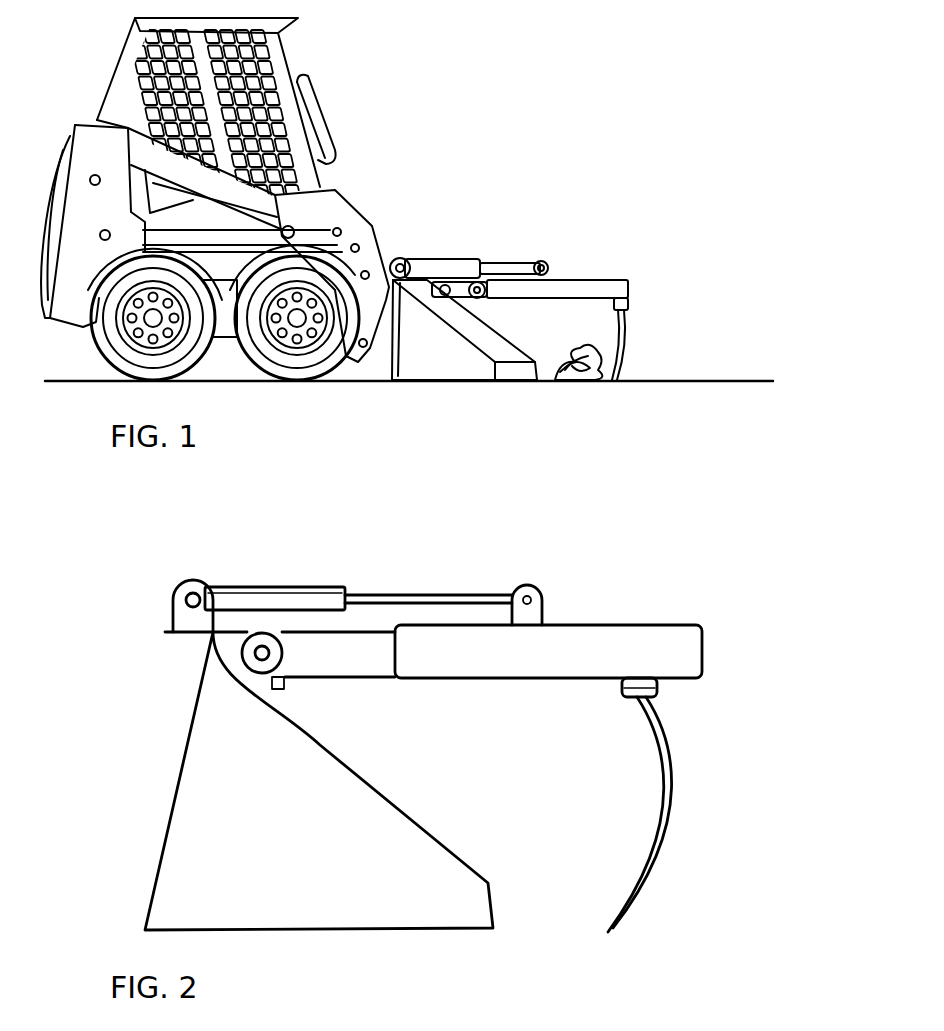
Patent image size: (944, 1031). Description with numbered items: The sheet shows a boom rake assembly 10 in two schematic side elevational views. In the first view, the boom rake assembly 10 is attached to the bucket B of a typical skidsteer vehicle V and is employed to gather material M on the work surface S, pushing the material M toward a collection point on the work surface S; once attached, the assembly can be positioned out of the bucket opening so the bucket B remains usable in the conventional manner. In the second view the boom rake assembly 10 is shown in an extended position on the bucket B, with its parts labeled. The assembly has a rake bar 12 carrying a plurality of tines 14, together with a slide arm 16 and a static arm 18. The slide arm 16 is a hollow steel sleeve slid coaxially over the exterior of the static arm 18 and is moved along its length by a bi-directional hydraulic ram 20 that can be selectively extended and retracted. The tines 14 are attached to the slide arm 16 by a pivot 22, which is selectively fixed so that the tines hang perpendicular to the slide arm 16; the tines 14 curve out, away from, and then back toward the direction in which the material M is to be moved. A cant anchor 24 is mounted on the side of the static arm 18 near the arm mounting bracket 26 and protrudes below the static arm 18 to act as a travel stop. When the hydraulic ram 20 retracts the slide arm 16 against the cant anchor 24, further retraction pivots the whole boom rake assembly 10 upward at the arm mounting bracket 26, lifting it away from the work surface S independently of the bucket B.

In FIG. 1, the boom rake assembly 10 is at (509, 283).
In FIG. 2, the boom rake assembly 10 is at (437, 719).
In FIG. 2, the rake bar 12 is at (697, 789).
In FIG. 2, the tines 14 is at (670, 800).
In FIG. 2, the slide arm 16 is at (557, 640).
In FIG. 2, the static arm 18 is at (361, 645).
In FIG. 2, the hydraulic ram 20 is at (293, 596).
In FIG. 2, the pivot 22 is at (657, 690).
In FIG. 2, the cant anchor 24 is at (283, 690).
In FIG. 2, the arm mounting bracket 26 is at (250, 660).
In FIG. 1, the bucket B is at (450, 367).
In FIG. 2, the bucket B is at (165, 810).
In FIG. 1, the skidsteer vehicle V is at (382, 128).
In FIG. 1, the material M is at (580, 382).
In FIG. 1, the work surface S is at (736, 380).